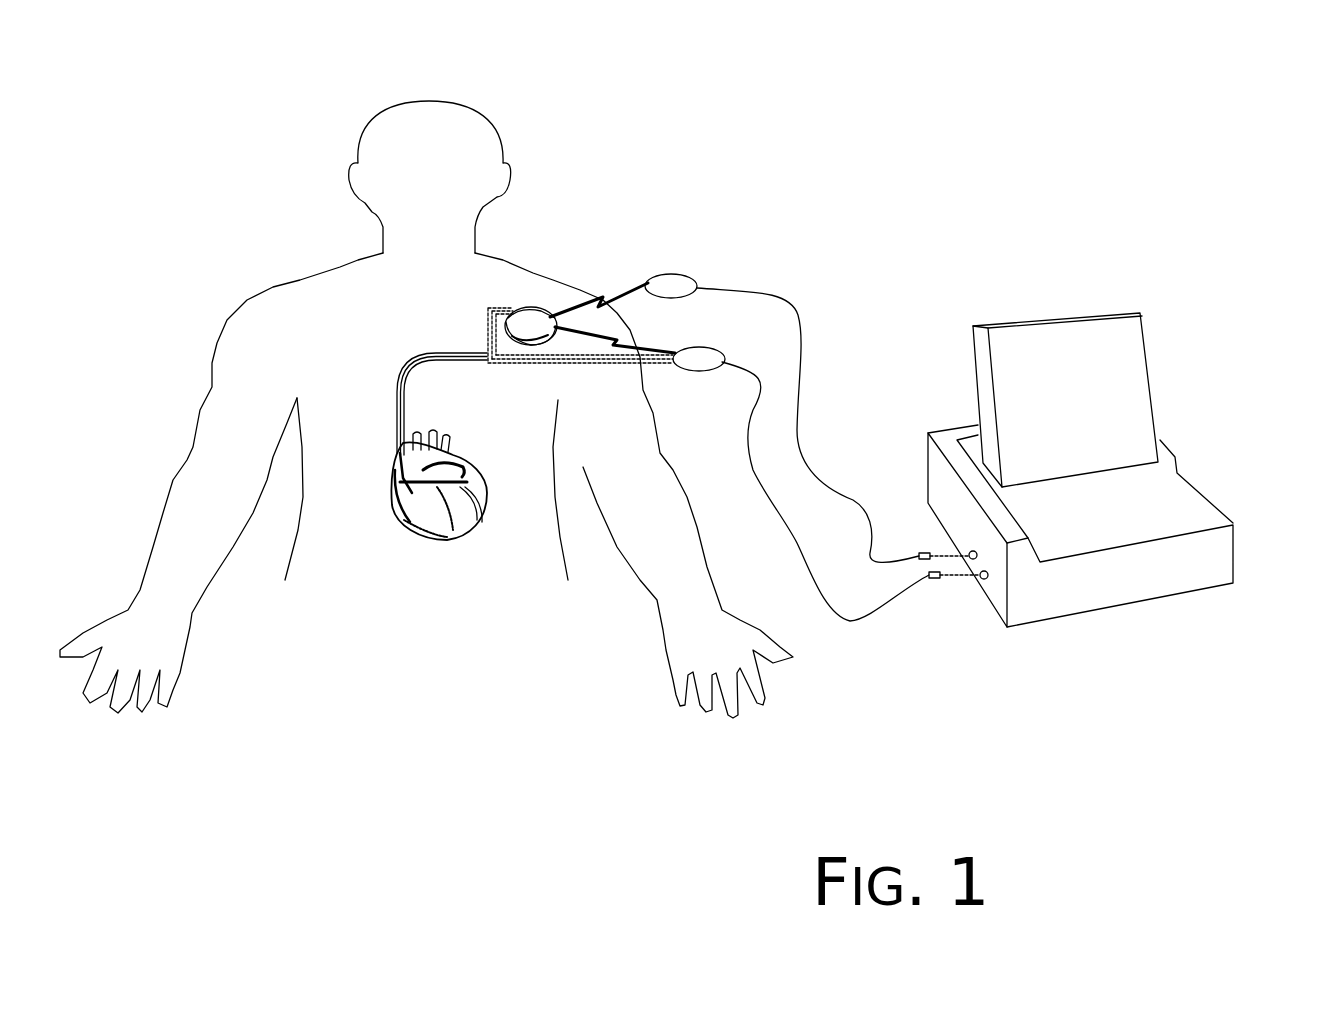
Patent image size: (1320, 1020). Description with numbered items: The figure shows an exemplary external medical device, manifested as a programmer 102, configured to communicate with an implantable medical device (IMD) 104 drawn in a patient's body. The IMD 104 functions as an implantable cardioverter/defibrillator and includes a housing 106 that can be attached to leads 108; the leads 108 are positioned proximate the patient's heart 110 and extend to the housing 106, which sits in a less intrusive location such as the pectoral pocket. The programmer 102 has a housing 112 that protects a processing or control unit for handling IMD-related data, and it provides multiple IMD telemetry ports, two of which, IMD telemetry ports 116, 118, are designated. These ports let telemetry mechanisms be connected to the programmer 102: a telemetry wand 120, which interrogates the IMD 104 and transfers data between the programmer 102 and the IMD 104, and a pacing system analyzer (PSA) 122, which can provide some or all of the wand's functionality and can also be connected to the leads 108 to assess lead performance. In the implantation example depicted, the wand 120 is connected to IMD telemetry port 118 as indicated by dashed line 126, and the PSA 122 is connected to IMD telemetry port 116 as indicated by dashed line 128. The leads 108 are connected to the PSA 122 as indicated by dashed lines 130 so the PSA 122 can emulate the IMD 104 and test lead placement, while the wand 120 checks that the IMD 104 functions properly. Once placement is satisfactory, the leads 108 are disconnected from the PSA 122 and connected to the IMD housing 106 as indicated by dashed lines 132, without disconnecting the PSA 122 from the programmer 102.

The programmer 102 is at (1032, 467).
The implantable medical device 104 is at (527, 292).
The housing 106 is at (518, 305).
The leads 108 is at (393, 387).
The heart 110 is at (440, 542).
The housing 112 is at (1058, 617).
The IMD telemetry port 116 is at (893, 623).
The IMD telemetry port 118 is at (967, 548).
The telemetry wand 120 is at (665, 272).
The pacing system analyzer 122 is at (703, 372).
The dashed line 126 is at (945, 552).
The dashed line 128 is at (959, 582).
The dashed lines 130 is at (552, 364).
The dashed lines 132 is at (484, 340).